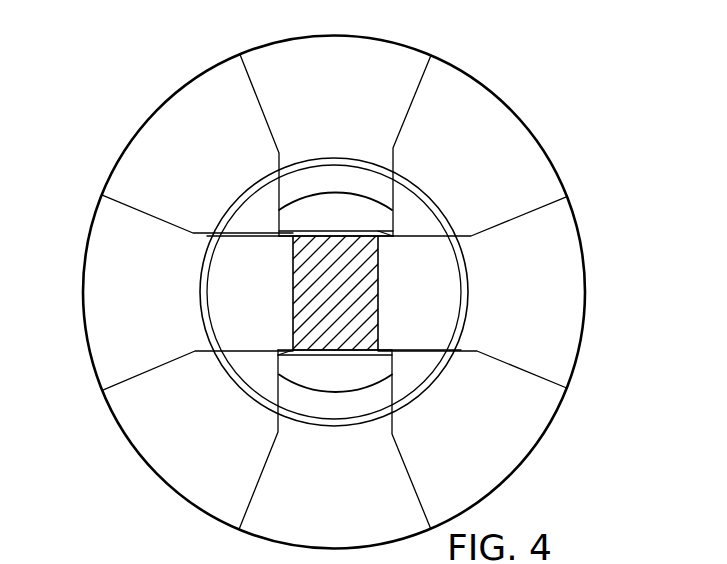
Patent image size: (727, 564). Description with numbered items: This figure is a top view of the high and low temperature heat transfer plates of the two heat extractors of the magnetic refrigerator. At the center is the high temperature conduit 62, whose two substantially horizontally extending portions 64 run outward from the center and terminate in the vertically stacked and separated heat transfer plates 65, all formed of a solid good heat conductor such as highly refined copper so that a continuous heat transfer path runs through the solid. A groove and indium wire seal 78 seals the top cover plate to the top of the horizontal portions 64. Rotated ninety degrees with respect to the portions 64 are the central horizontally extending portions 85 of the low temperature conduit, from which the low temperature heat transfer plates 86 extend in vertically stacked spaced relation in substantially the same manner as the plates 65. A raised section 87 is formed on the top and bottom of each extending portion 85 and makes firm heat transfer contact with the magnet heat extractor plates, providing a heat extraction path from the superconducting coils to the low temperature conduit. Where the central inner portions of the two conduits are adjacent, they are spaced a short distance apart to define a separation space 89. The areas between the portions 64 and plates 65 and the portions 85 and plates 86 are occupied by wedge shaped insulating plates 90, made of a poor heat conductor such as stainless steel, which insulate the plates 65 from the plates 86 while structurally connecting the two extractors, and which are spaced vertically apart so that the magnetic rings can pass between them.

The high temperature conduit 62 is at (378, 330).
The horizontally extending portions 64 is at (240, 243).
The heat transfer plates 65 is at (83, 272).
The groove and indium wire seal 78 is at (464, 296).
The horizontally extending portions 85 is at (379, 177).
The heat transfer plates 86 is at (403, 53).
The raised section 87 is at (347, 195).
The separation space 89 is at (392, 232).
The wedge shaped insulating plates 90 is at (207, 70).